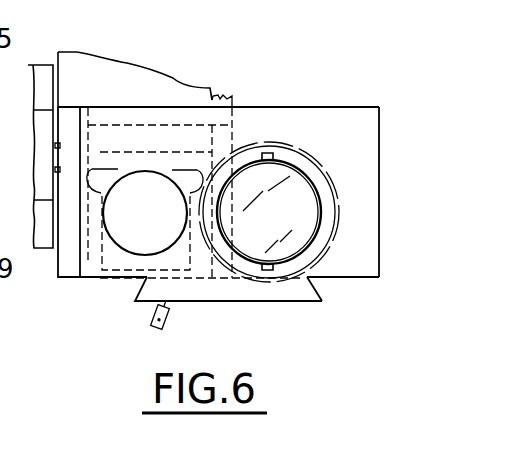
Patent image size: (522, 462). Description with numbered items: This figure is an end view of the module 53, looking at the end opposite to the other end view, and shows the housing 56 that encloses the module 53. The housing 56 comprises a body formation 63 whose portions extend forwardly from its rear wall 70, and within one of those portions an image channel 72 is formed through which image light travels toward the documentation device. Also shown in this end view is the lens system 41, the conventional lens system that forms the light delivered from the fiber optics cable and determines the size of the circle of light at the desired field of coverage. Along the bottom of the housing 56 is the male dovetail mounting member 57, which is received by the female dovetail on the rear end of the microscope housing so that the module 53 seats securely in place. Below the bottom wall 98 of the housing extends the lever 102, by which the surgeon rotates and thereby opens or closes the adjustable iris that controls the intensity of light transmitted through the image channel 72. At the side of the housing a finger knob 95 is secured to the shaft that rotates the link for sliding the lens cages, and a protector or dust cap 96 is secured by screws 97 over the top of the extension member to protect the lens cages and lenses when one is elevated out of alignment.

The finger knob 95 is at (40, 68).
The protector or dust cap 96 is at (128, 68).
The screws 97 is at (233, 98).
The body formation 63 is at (305, 107).
The housing 56 is at (380, 118).
The rear wall 70 is at (366, 185).
The lens system 41 is at (297, 218).
The image channel 72 is at (118, 232).
The bottom wall 98 is at (98, 280).
The male dovetail mounting member 57 is at (324, 292).
The lever 102 is at (170, 322).
The module 53 is at (120, 325).